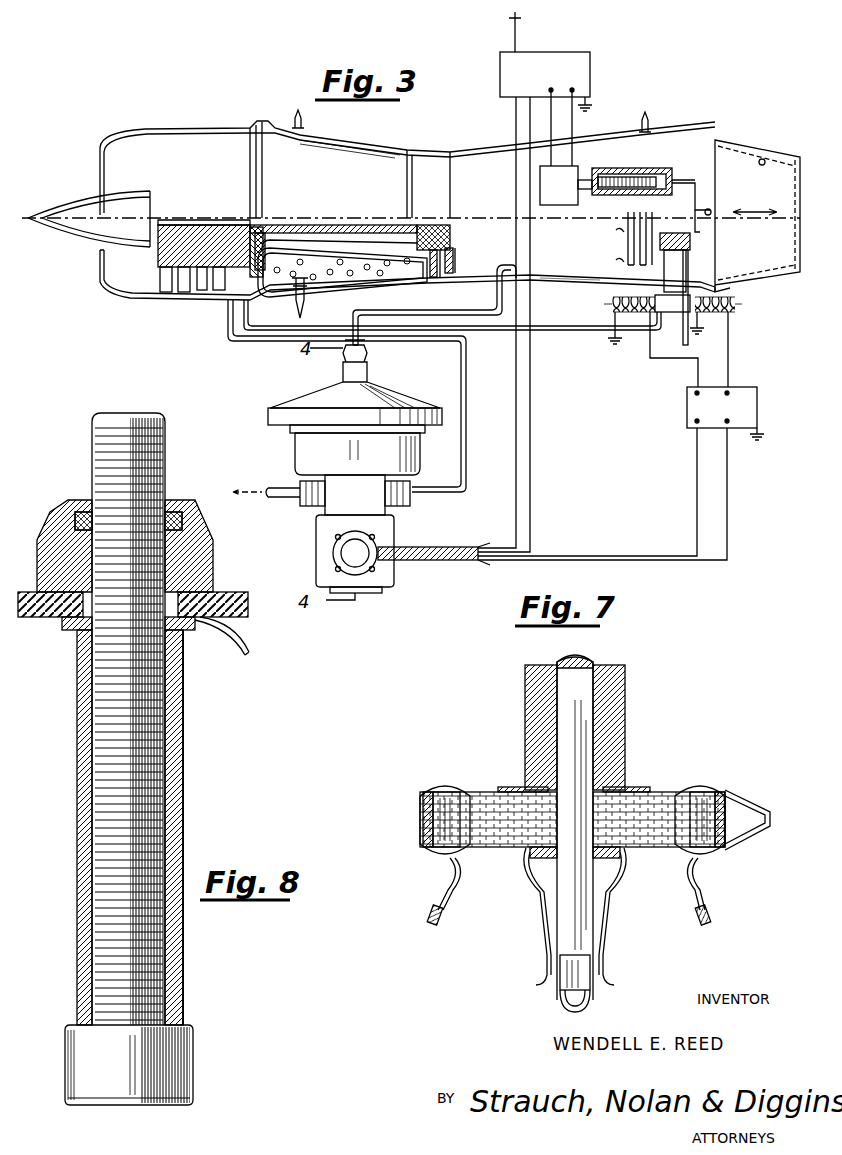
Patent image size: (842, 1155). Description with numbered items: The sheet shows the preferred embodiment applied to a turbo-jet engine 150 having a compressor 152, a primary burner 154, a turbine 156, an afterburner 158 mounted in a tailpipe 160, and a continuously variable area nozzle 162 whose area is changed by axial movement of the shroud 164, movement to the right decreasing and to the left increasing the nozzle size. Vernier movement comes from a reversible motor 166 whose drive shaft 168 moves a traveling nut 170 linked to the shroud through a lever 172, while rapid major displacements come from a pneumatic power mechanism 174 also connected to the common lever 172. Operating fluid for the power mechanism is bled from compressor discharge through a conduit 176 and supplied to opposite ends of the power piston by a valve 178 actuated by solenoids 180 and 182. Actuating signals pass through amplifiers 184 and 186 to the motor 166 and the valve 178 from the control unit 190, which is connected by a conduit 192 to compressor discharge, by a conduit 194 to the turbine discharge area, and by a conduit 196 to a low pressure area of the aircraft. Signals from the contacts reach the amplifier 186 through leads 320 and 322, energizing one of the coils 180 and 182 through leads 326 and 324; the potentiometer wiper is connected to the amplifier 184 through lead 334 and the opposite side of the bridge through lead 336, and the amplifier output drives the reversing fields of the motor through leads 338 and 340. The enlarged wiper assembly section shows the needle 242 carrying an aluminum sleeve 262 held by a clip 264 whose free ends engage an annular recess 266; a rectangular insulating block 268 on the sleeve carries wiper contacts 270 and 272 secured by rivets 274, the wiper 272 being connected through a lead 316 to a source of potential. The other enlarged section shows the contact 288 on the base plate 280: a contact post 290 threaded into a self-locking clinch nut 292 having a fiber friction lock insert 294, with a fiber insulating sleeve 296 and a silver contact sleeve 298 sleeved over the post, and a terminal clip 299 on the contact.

In FIG. 3, the turbo-jet engine 150 is at (386, 140).
In FIG. 3, the compressor 152 is at (202, 312).
In FIG. 3, the primary burner 154 is at (339, 283).
In FIG. 3, the turbine 156 is at (455, 276).
In FIG. 3, the afterburner 158 is at (614, 244).
In FIG. 3, the tailpipe 160 is at (568, 283).
In FIG. 3, the continuously variable area nozzle 162 is at (770, 150).
In FIG. 3, the shroud 164 is at (745, 282).
In FIG. 3, the reversible motor 166 is at (555, 205).
In FIG. 3, the drive shaft 168 is at (634, 176).
In FIG. 3, the traveling nut 170 is at (604, 168).
In FIG. 3, the lever 172 is at (695, 183).
In FIG. 3, the pneumatic power mechanism 174 is at (702, 259).
In FIG. 3, the conduit 176 is at (540, 330).
In FIG. 3, the valve 178 is at (670, 312).
In FIG. 3, the solenoid 180 is at (608, 302).
In FIG. 3, the solenoid 182 is at (725, 292).
In FIG. 3, the amplifier 184 is at (590, 72).
In FIG. 3, the amplifier 186 is at (757, 392).
In FIG. 3, the control unit 190 is at (286, 456).
In FIG. 3, the conduit 192 is at (466, 372).
In FIG. 3, the conduit 194 is at (398, 311).
In FIG. 3, the conduit 196 is at (282, 500).
In FIG. 3, the lead 320 is at (727, 498).
In FIG. 3, the lead 322 is at (694, 500).
In FIG. 3, the lead 324 is at (730, 368).
In FIG. 3, the lead 326 is at (694, 374).
In FIG. 3, the lead 334 is at (533, 478).
In FIG. 7, the lead 334 is at (710, 914).
In FIG. 3, the lead 336 is at (516, 480).
In FIG. 3, the lead 338 is at (546, 102).
In FIG. 3, the lead 340 is at (586, 112).
In FIG. 7, the needle 242 is at (590, 660).
In FIG. 7, the aluminum sleeve 262 is at (626, 734).
In FIG. 7, the clip 264 is at (566, 926).
In FIG. 7, the annular recess 266 is at (562, 992).
In FIG. 7, the insulating block 268 is at (666, 790).
In FIG. 7, the wiper contact 270 is at (735, 802).
In FIG. 7, the wiper contact 272 is at (420, 820).
In FIG. 7, the rivets 274 is at (448, 782).
In FIG. 7, the lead 316 is at (448, 913).
In FIG. 8, the base plate 280 is at (232, 592).
In FIG. 8, the contact 288 is at (198, 773).
In FIG. 8, the contact post 290 is at (183, 709).
In FIG. 8, the self-locking clinch nut 292 is at (184, 512).
In FIG. 8, the fiber friction lock insert 294 is at (88, 512).
In FIG. 8, the fiber insulating sleeve 296 is at (185, 836).
In FIG. 8, the silver contact sleeve 298 is at (77, 726).
In FIG. 8, the terminal clip 299 is at (252, 640).